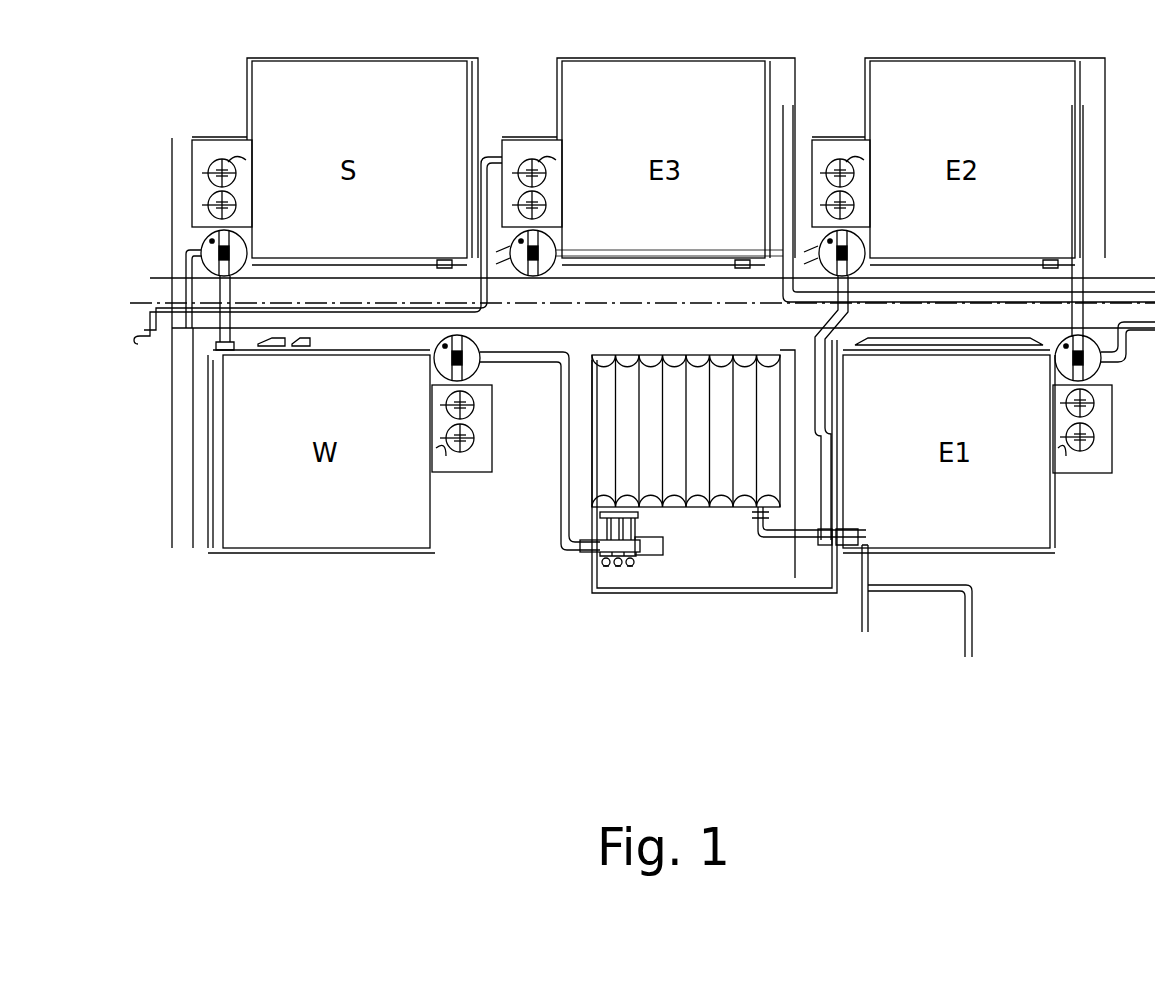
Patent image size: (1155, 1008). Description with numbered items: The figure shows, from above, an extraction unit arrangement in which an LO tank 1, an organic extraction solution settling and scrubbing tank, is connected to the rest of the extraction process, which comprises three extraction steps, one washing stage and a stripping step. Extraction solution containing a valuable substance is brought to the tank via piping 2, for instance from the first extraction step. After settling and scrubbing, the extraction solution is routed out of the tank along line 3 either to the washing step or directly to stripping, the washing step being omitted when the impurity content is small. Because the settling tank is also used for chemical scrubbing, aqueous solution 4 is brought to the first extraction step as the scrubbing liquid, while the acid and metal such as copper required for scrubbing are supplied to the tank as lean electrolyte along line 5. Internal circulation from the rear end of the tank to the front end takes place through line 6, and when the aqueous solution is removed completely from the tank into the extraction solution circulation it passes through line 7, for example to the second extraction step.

The LO tank 1 is at (677, 507).
The piping 2 is at (834, 476).
The line 3 is at (562, 600).
The aqueous solution 4 is at (868, 626).
The line 5 is at (970, 626).
The line 6 is at (668, 596).
The line 7 is at (838, 520).